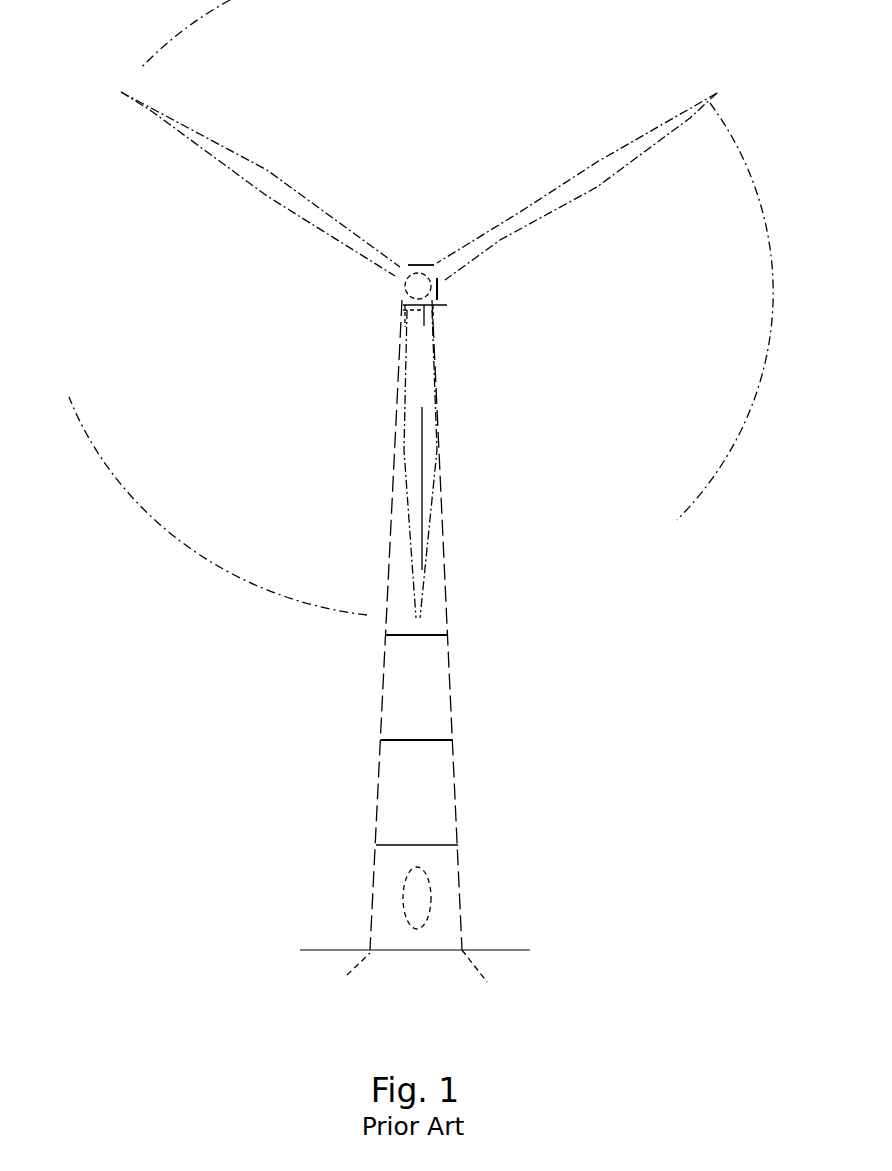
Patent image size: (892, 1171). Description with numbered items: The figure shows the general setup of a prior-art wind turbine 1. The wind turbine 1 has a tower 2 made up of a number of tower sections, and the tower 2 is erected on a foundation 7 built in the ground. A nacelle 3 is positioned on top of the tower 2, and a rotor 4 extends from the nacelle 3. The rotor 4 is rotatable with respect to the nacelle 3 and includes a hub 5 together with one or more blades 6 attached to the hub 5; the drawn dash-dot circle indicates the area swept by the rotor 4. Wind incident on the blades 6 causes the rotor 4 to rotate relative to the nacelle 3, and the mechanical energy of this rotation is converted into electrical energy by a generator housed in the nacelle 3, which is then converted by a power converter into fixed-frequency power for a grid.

The wind turbine 1 is at (142, 717).
The tower 2 is at (435, 803).
The nacelle 3 is at (445, 297).
The rotor 4 is at (711, 479).
The hub 5 is at (417, 288).
The blades 6 is at (545, 202).
The foundation 7 is at (373, 963).